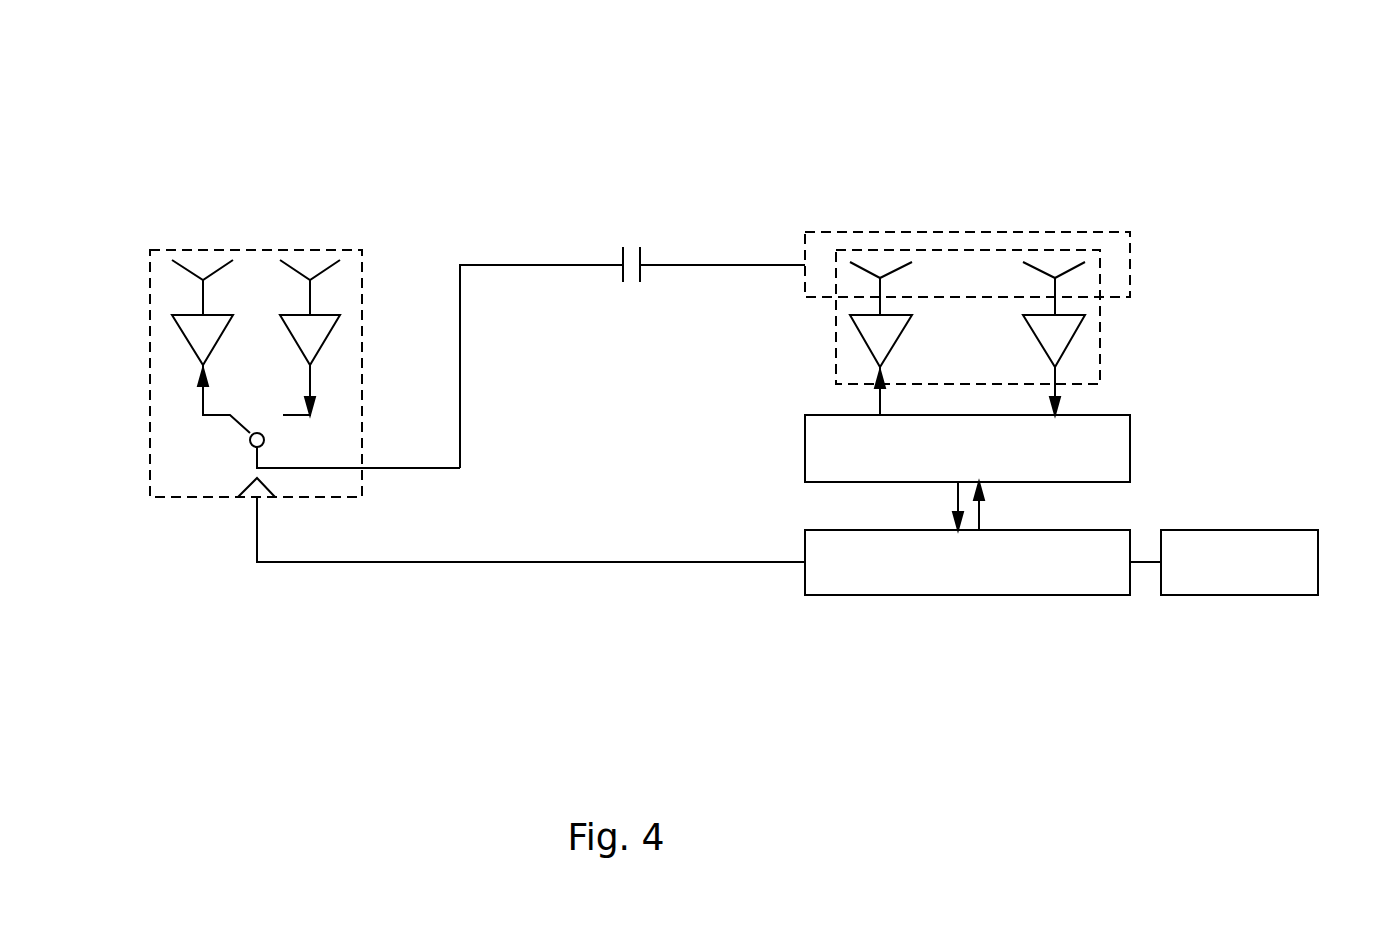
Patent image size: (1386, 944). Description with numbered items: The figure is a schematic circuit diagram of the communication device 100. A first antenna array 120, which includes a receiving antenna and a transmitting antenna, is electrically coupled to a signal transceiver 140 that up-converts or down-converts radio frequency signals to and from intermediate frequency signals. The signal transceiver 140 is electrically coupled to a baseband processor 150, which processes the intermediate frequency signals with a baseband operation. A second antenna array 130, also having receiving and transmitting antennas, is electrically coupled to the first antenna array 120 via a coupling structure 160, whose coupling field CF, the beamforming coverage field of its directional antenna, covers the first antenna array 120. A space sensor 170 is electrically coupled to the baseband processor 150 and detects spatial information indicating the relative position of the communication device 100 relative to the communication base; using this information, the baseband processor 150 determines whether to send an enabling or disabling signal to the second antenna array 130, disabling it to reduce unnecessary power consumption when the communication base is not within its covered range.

The communication device 100 is at (1082, 63).
The first antenna array 120 is at (1100, 344).
The second antenna array 130 is at (328, 250).
The signal transceiver 140 is at (1130, 450).
The baseband processor 150 is at (1085, 595).
The coupling structure 160 is at (700, 198).
The space sensor 170 is at (1245, 595).
The coupling field CF is at (930, 232).